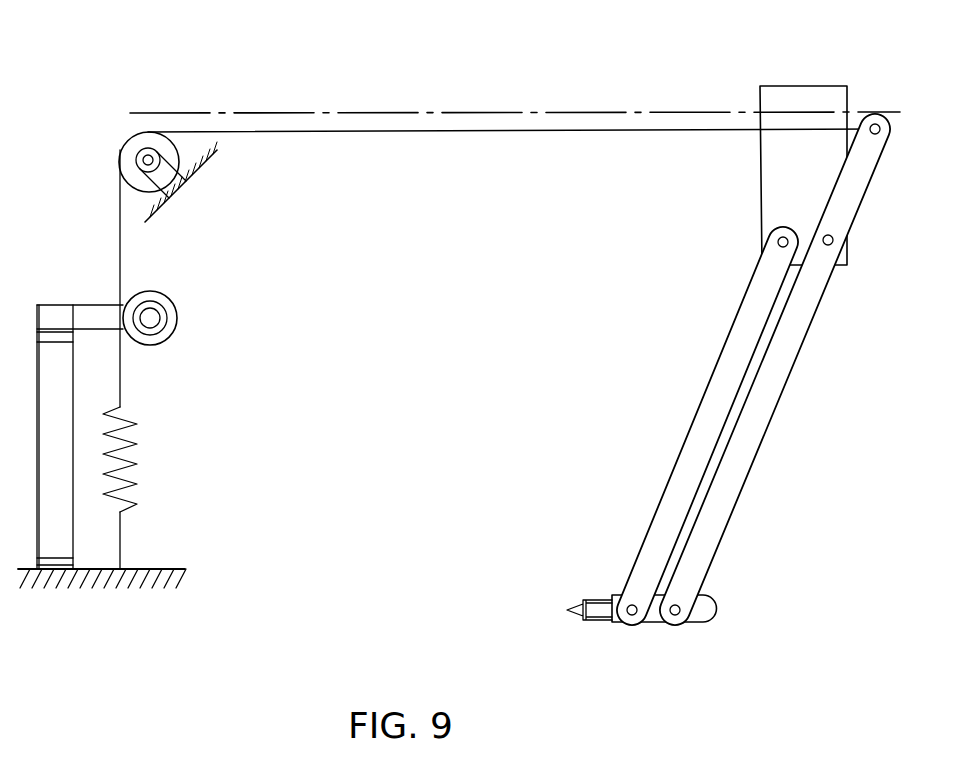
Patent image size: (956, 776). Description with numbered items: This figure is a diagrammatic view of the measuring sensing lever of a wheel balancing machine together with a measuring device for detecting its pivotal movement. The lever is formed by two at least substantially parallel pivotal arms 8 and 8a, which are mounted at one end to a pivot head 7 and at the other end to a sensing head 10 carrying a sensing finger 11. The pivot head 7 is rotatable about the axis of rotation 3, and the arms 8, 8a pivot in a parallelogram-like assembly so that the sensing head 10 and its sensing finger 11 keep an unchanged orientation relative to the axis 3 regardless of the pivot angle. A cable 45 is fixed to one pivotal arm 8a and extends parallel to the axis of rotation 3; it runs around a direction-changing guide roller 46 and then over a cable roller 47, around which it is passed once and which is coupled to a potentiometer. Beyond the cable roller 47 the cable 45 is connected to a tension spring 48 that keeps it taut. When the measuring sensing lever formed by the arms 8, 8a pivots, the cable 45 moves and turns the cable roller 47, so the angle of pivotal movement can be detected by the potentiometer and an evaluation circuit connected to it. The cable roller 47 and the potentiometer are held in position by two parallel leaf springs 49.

The axis of rotation 3 is at (585, 112).
The pivot head 7 is at (783, 92).
The pivotal arm 8 is at (690, 452).
The pivotal arm 8a is at (755, 437).
The sensing head 10 is at (655, 614).
The sensing finger 11 is at (597, 612).
The cable 45 is at (483, 131).
The guide roller 46 is at (128, 153).
The cable roller 47 is at (177, 316).
The tension spring 48 is at (130, 470).
The leaf springs 49 is at (50, 353).